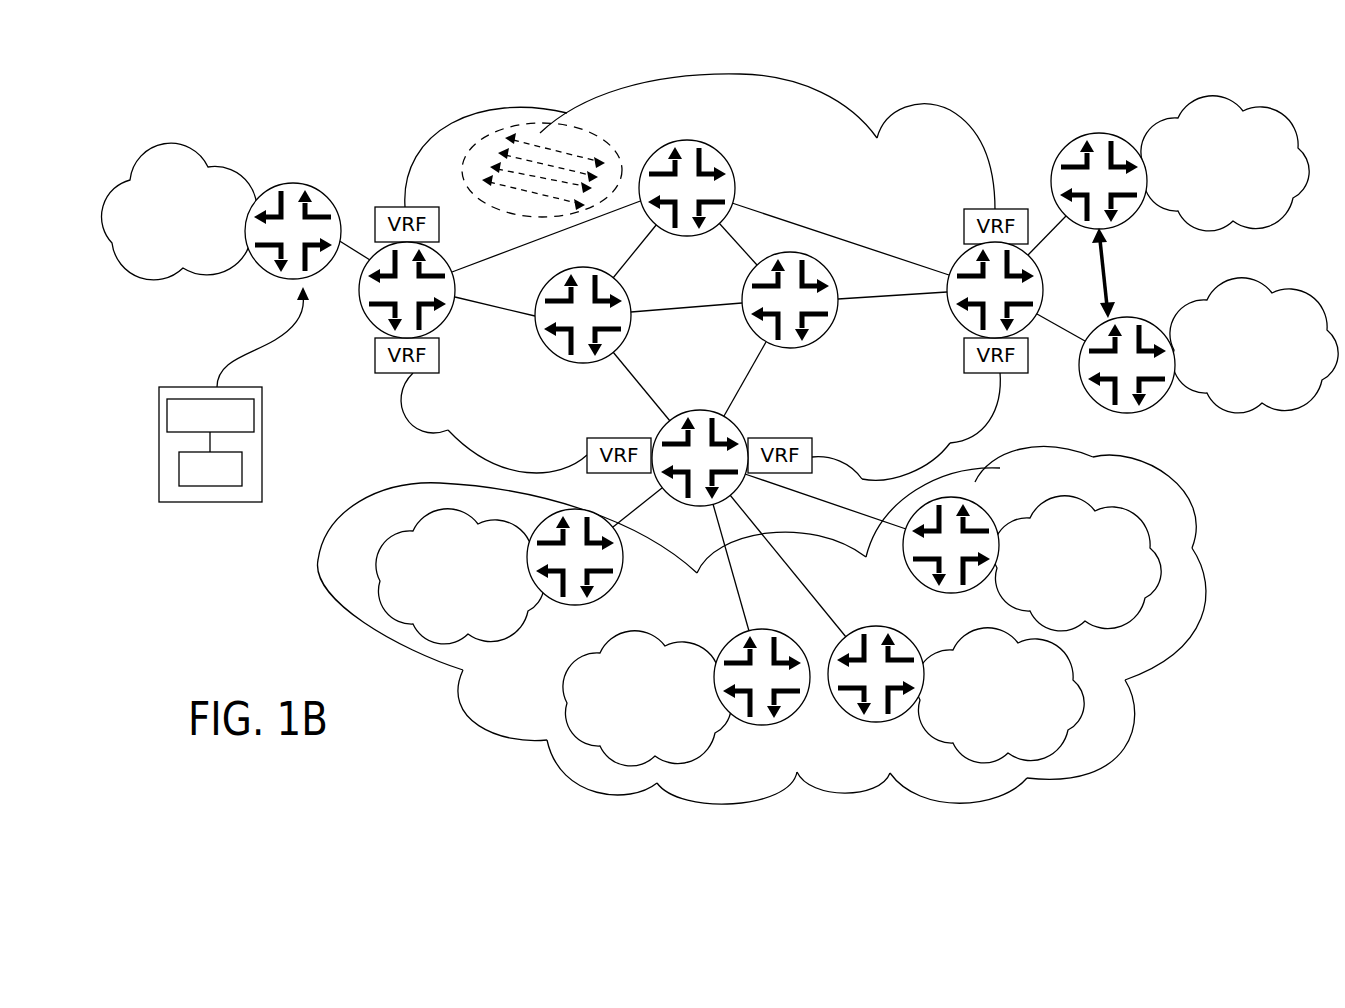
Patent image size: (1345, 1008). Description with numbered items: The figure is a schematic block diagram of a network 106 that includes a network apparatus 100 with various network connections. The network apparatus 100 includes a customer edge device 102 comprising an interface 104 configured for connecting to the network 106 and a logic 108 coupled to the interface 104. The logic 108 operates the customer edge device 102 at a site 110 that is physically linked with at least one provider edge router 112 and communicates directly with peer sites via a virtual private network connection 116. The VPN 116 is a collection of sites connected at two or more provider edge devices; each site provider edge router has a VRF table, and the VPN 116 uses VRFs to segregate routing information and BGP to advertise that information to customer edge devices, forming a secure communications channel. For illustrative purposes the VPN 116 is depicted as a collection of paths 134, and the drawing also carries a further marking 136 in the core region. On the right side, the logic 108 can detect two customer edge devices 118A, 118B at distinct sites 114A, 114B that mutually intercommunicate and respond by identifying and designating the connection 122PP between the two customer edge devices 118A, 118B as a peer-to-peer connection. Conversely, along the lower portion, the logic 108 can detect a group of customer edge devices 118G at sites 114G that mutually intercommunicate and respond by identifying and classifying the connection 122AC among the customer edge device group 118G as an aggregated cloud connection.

The network apparatus 100 is at (211, 394).
The customer edge device 102 is at (283, 278).
The interface 104 is at (242, 470).
The network 106 is at (1122, 70).
The logic 108 is at (254, 418).
The site 110 is at (176, 269).
The provider edge router 112 is at (452, 318).
The site 114A is at (1280, 220).
The site 114B is at (1253, 418).
The sites 114G is at (493, 627).
The virtual private network connection 116 is at (700, 277).
The customer edge device 118A is at (1130, 221).
The customer edge device 118B is at (1137, 413).
The customer edge device group 118G is at (538, 522).
The peer-to-peer connection 122PP is at (1110, 283).
The aggregated cloud connection 122AC is at (1133, 705).
The paths 134 is at (514, 168).
The network boundary 136 is at (847, 110).